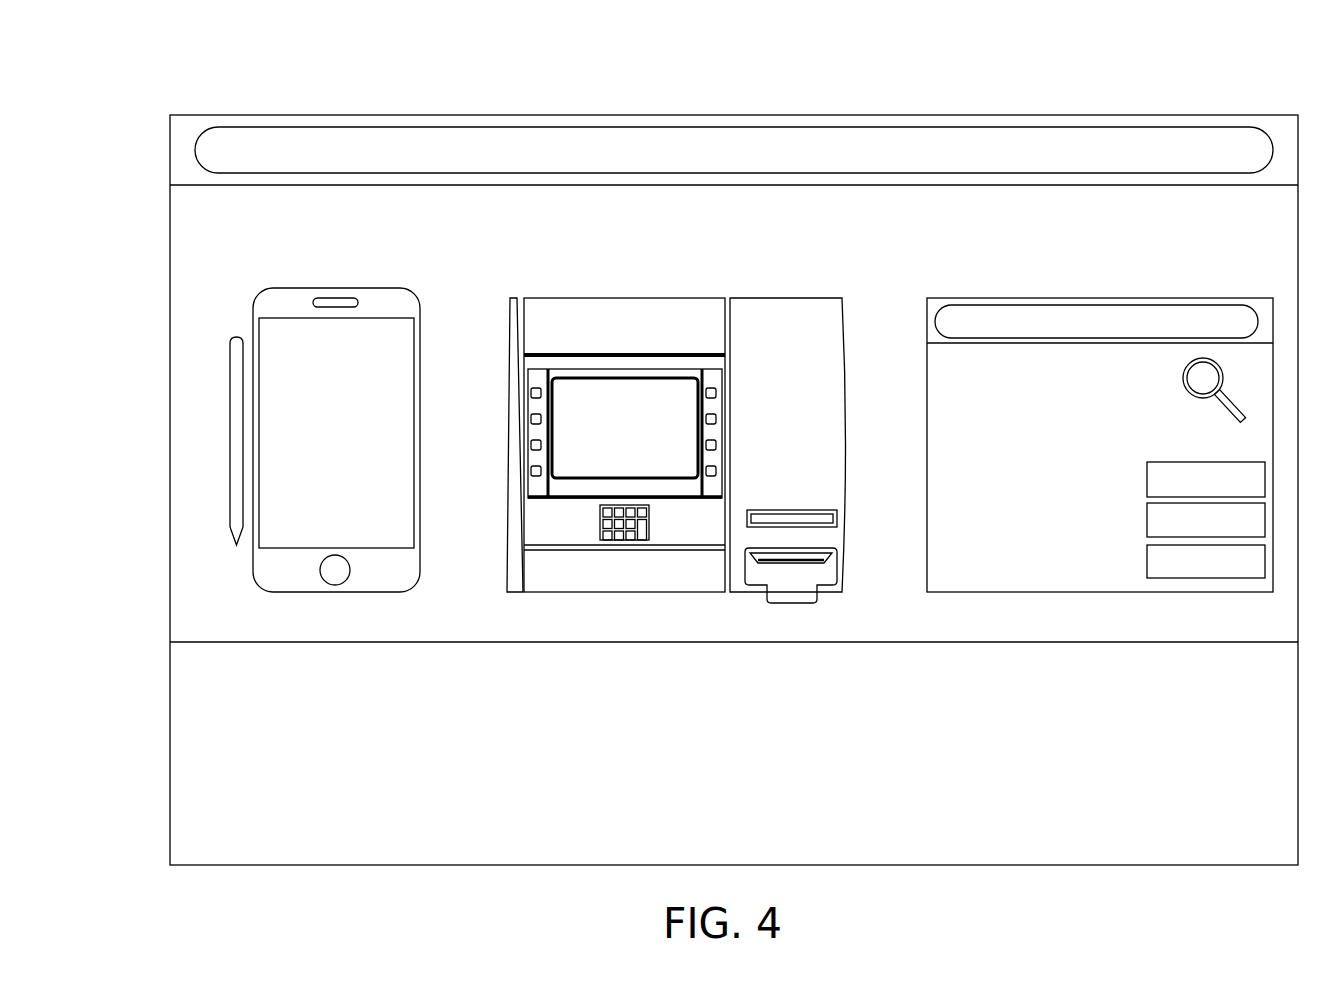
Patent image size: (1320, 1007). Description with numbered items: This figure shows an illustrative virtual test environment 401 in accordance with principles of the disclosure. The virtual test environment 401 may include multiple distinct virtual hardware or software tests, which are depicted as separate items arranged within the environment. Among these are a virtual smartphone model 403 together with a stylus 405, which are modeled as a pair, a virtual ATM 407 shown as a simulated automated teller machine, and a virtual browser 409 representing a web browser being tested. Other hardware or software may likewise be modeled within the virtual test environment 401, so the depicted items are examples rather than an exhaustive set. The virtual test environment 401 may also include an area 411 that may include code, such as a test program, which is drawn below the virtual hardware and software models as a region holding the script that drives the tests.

The virtual test environment 401 is at (218, 74).
The virtual smartphone model 403 is at (333, 289).
The stylus 405 is at (239, 336).
The virtual ATM 407 is at (624, 298).
The virtual browser 409 is at (1105, 298).
The area 411 is at (197, 801).